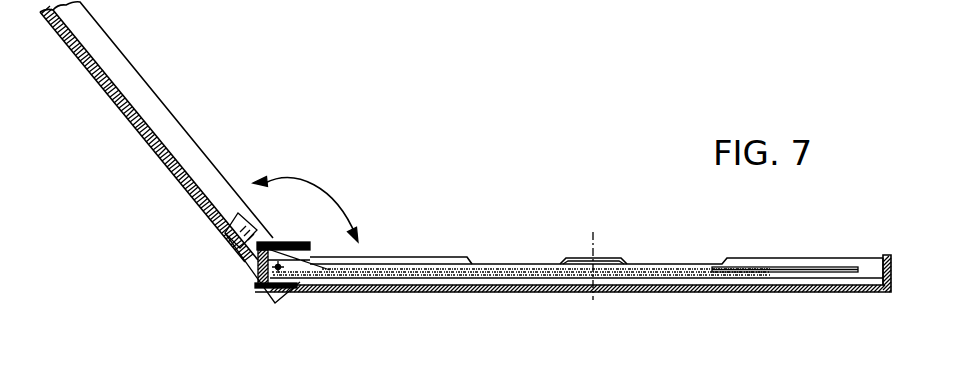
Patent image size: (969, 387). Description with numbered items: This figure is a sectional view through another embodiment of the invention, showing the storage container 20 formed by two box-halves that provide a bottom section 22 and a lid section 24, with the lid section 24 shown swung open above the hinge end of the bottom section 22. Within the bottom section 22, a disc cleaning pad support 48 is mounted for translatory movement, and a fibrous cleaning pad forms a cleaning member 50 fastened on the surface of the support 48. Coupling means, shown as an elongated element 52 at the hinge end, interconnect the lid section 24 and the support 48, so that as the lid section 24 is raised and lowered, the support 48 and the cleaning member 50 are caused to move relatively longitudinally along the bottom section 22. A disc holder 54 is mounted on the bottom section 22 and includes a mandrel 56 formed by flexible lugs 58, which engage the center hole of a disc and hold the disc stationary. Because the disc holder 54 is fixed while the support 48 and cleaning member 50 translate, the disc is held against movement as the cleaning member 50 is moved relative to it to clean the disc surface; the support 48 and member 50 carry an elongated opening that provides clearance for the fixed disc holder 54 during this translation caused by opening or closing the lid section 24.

The storage container 20 is at (421, 236).
The bottom section 22 is at (842, 292).
The lid section 24 is at (183, 190).
The disc cleaning pad support 48 is at (790, 279).
The cleaning member 50 is at (682, 277).
The elongated element 52 is at (272, 233).
The disc holder 54 is at (612, 236).
The mandrel 56 is at (627, 262).
The flexible lugs 58 is at (558, 262).